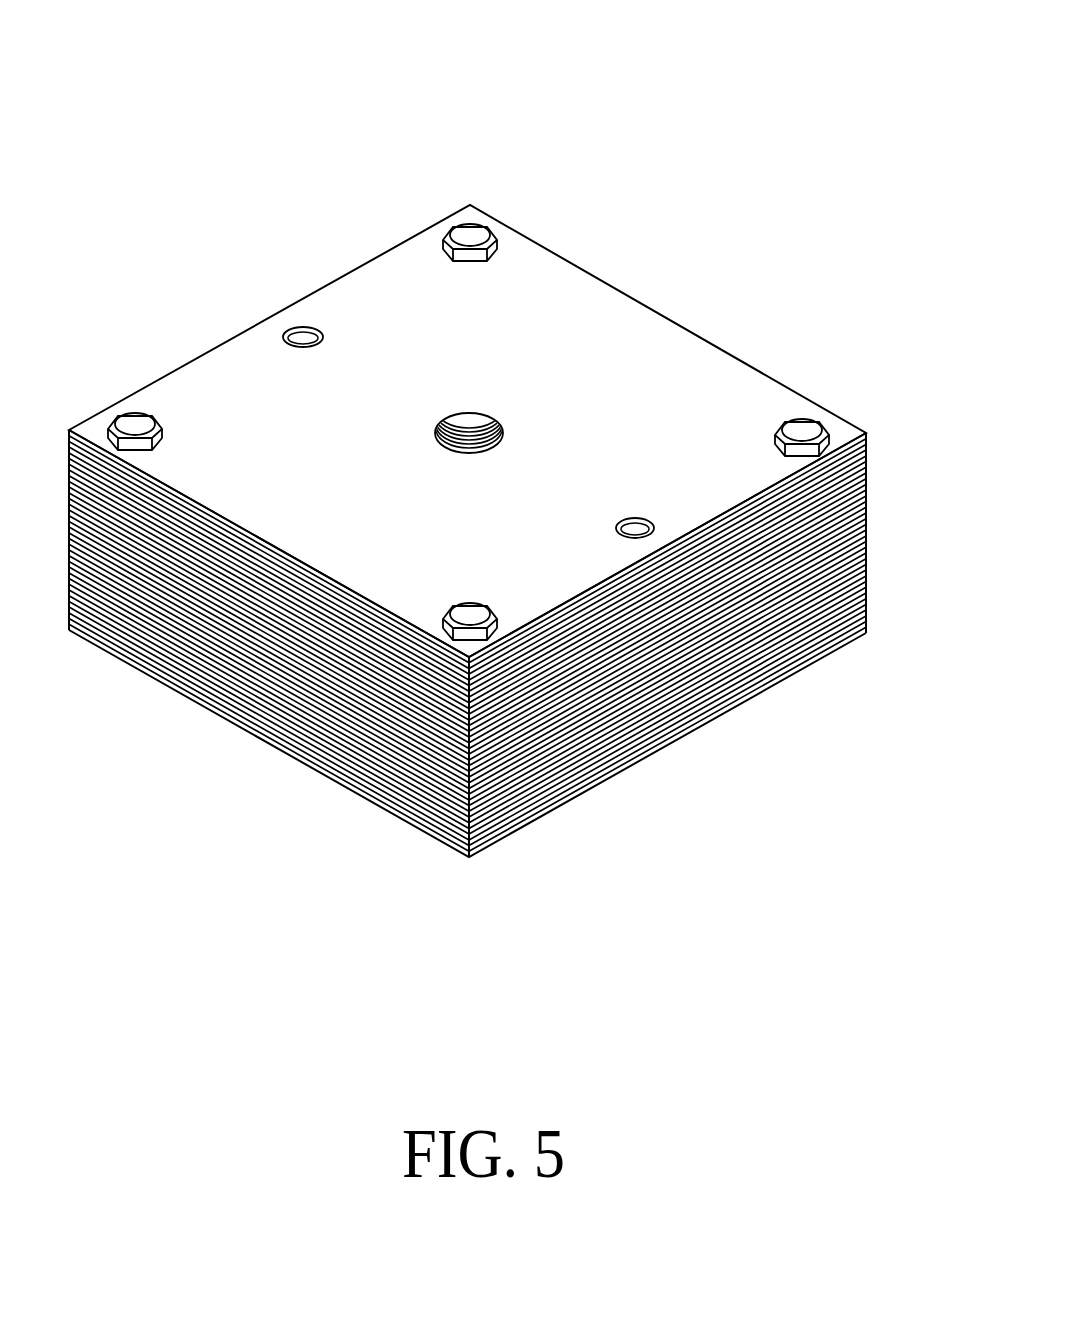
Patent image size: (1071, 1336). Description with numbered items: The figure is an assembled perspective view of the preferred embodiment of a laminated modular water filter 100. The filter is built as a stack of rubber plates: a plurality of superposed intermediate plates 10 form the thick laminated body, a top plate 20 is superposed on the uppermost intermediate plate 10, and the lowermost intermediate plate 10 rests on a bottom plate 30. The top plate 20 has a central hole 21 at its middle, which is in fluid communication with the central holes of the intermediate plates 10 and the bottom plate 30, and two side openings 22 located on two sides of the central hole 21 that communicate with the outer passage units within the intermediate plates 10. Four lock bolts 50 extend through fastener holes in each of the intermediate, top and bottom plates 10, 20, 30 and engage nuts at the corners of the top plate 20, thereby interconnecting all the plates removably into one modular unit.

The laminated modular water filter 100 is at (143, 243).
The intermediate plate 10 is at (868, 491).
The top plate 20 is at (558, 254).
The central hole 21 is at (457, 432).
The side openings 22 is at (303, 328).
The bottom plate 30 is at (758, 690).
The lock bolt 50 is at (803, 428).